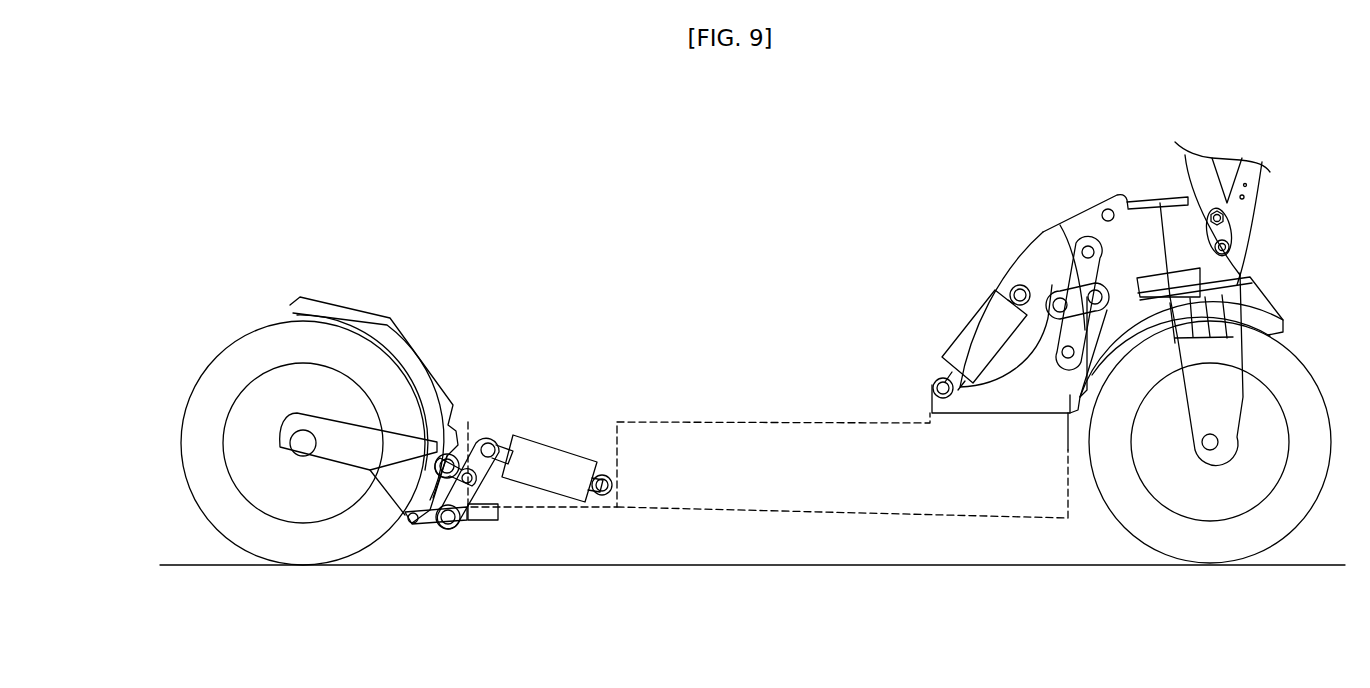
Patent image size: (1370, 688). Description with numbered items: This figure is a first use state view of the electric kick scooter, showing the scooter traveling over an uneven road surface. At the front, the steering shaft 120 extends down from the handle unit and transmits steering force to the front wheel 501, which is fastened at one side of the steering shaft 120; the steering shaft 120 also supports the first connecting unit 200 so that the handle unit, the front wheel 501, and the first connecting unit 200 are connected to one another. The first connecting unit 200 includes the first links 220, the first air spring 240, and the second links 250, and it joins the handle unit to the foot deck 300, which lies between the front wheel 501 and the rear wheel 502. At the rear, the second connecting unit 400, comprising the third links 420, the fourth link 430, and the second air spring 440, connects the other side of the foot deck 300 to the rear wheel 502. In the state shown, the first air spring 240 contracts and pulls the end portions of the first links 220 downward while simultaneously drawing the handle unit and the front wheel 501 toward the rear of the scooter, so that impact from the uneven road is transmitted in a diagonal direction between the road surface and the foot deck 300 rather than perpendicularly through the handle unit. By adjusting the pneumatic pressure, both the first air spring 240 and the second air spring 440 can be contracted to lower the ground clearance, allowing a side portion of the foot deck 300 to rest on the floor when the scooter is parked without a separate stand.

The steering shaft 120 is at (1252, 222).
The first connecting unit 200 is at (1003, 214).
The first links 220 is at (1046, 262).
The first air spring 240 is at (965, 333).
The second links 250 is at (1062, 362).
The foot deck 300 is at (786, 414).
The second connecting unit 400 is at (478, 352).
The third links 420 is at (493, 540).
The fourth link 430 is at (462, 443).
The second air spring 440 is at (562, 507).
The front wheel 501 is at (1207, 563).
The rear wheel 502 is at (303, 565).